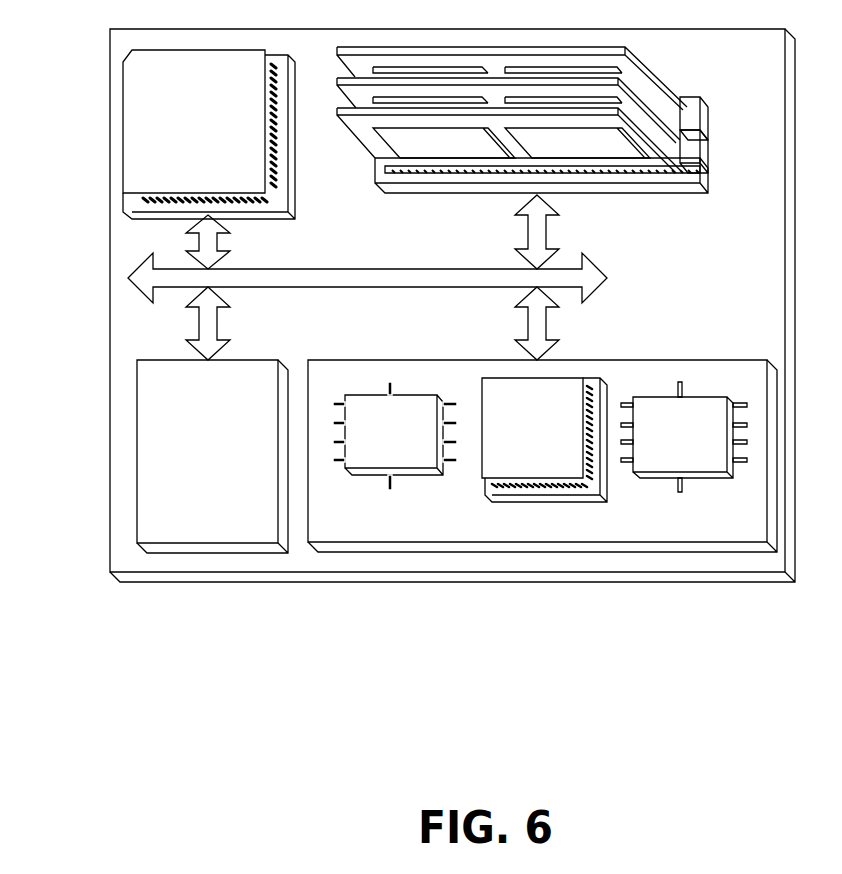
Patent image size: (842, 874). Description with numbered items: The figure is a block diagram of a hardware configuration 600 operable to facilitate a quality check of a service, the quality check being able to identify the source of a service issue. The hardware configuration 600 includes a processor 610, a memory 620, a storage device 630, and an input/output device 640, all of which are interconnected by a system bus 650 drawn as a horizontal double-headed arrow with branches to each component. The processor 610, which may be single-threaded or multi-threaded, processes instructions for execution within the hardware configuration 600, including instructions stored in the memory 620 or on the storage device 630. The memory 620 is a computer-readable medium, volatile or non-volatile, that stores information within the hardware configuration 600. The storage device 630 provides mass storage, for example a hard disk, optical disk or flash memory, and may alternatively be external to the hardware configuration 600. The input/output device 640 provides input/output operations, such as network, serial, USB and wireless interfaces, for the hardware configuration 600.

The hardware configuration 600 is at (90, 686).
The processor 610 is at (253, 182).
The memory 620 is at (674, 92).
The storage device 630 is at (266, 536).
The input/output device 640 is at (722, 358).
The system bus 650 is at (370, 288).